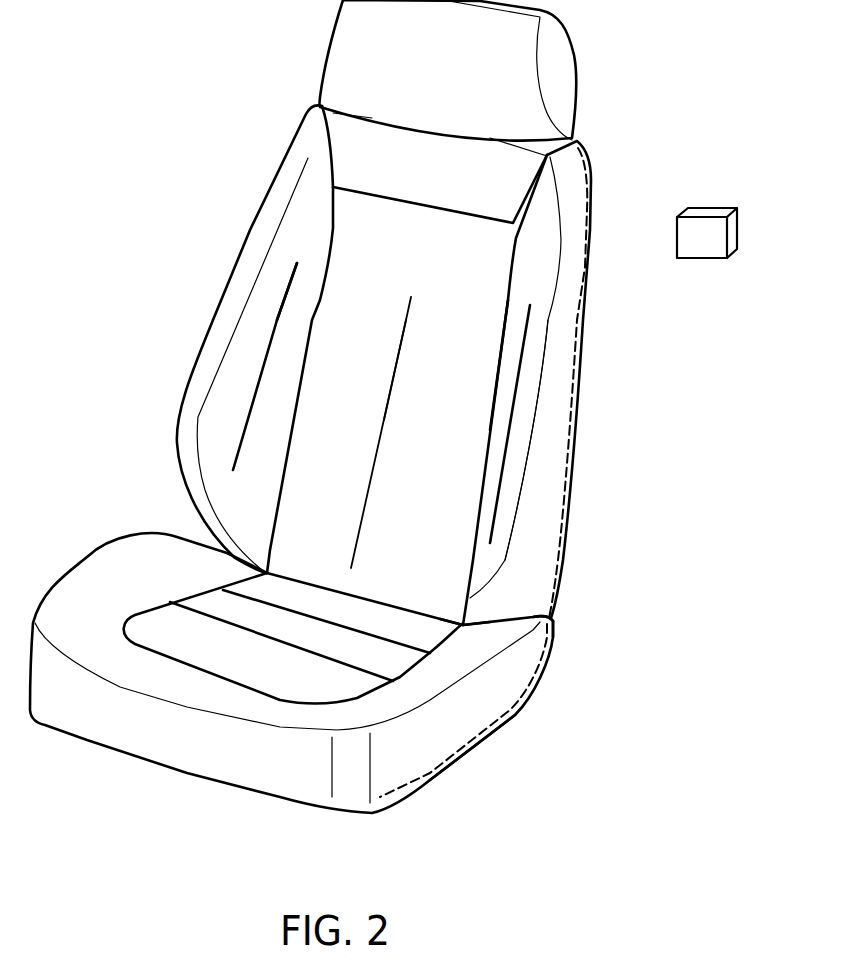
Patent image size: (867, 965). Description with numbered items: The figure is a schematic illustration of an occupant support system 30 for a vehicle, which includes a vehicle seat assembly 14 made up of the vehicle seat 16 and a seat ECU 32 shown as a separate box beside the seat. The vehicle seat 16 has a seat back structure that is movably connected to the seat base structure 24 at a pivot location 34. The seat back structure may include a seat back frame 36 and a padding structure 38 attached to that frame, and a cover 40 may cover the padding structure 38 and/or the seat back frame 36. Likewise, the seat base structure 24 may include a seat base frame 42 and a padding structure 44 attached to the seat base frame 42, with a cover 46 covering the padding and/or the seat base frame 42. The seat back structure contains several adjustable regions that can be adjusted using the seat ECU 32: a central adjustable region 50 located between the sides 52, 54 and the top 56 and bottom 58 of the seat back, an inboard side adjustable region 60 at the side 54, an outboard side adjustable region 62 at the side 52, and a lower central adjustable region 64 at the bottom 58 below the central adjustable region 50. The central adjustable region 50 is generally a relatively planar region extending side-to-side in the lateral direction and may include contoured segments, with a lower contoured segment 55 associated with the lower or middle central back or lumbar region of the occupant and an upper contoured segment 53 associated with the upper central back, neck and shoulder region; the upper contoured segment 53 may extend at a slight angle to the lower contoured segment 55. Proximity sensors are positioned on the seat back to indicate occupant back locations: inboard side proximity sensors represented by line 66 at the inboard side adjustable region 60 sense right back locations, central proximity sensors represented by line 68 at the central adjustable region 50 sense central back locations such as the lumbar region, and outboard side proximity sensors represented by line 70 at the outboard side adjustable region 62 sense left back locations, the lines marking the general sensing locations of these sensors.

The vehicle seat assembly 14 is at (358, 453).
The vehicle seat 16 is at (395, 367).
The seat base structure 24 is at (312, 720).
The occupant support system 30 is at (358, 453).
The seat ECU 32 is at (706, 209).
The pivot location 34 is at (548, 623).
The seat back frame 36 is at (585, 200).
The padding structure 38 is at (570, 440).
The cover 40 is at (503, 172).
The seat base frame 42 is at (517, 710).
The padding structure 44 is at (471, 771).
The cover 46 is at (370, 650).
The central adjustable region 50 is at (384, 390).
The side 52 is at (227, 287).
The upper contoured segment 53 is at (348, 375).
The side 54 is at (565, 327).
The lower contoured segment 55 is at (300, 621).
The top 56 is at (330, 107).
The bottom 58 is at (448, 619).
The inboard side adjustable region 60 is at (257, 243).
The outboard side adjustable region 62 is at (455, 391).
The lower central adjustable region 64 is at (369, 587).
The inboard side proximity sensors 66 is at (293, 287).
The central proximity sensors 68 is at (400, 361).
The outboard side proximity sensors 70 is at (513, 397).